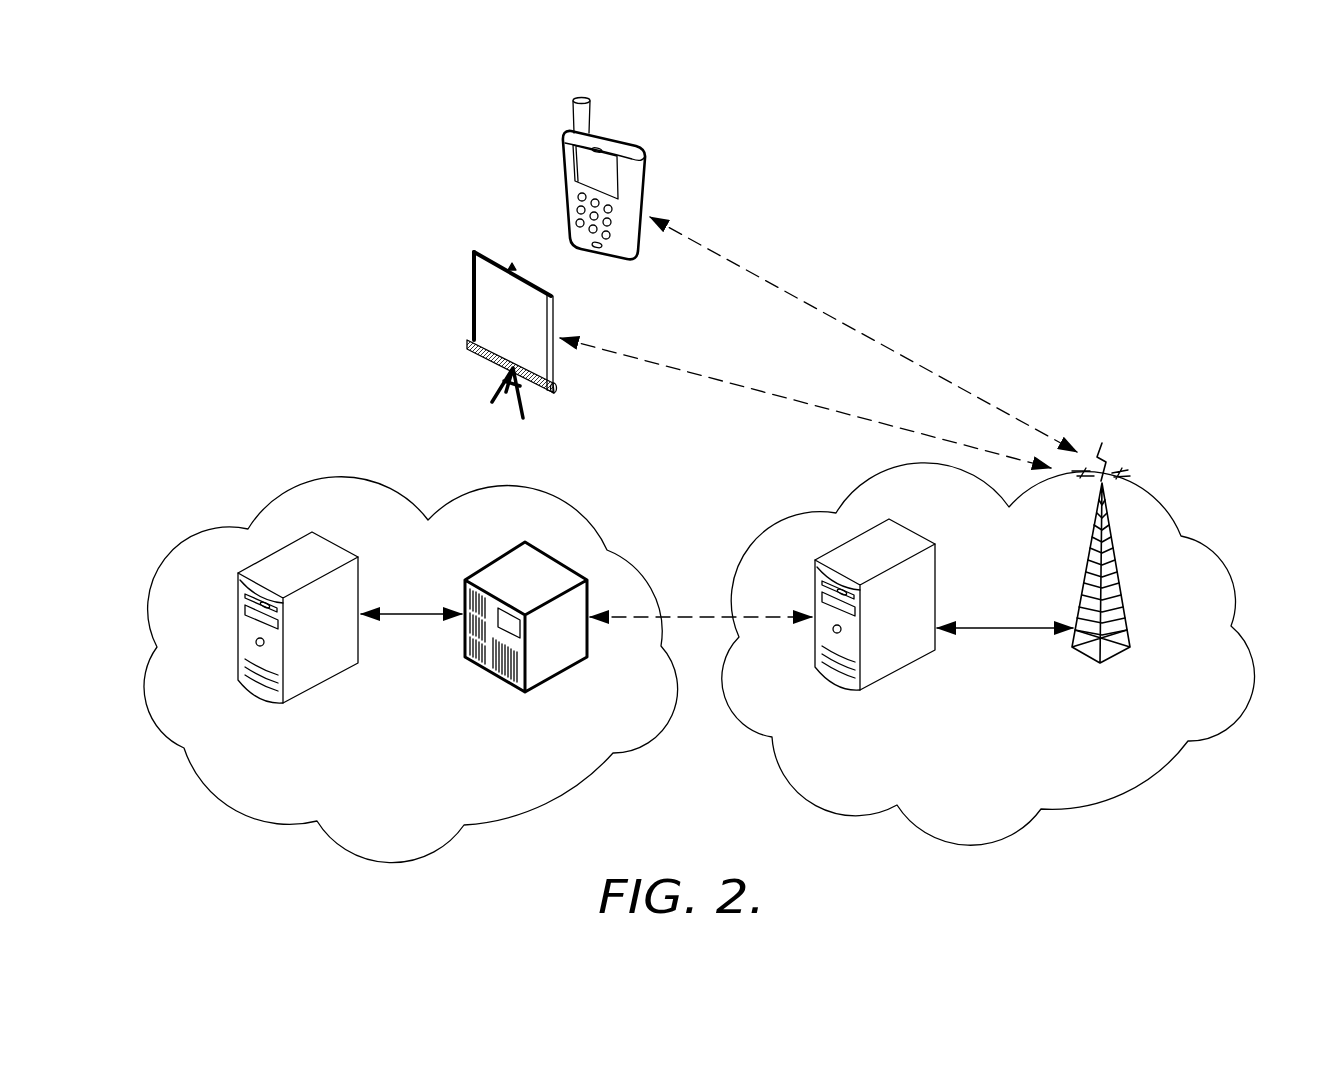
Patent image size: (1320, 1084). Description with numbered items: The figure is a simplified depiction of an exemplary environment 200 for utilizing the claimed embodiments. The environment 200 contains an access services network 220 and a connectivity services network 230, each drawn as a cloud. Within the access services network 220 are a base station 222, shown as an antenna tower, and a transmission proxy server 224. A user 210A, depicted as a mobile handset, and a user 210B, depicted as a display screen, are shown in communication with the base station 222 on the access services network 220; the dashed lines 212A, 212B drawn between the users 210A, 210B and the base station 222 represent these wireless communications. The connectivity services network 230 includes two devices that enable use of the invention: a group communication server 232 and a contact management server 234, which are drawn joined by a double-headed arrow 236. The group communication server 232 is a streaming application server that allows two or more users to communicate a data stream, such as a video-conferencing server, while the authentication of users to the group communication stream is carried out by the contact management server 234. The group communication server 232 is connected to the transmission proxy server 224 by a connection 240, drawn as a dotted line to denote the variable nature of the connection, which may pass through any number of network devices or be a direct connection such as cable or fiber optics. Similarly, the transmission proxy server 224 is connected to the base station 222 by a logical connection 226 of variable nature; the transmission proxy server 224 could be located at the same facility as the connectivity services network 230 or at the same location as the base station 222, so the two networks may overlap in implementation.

The exemplary environment 200 is at (232, 146).
The user 210A is at (563, 130).
The user 210B is at (476, 252).
The wireless link to terminal 210A 212A is at (863, 334).
The wireless link to terminal 210B 212B is at (805, 403).
The access services network 220 is at (1210, 546).
The base station 222 is at (1117, 559).
The transmission proxy server 224 is at (918, 535).
The connection 226 is at (971, 627).
The connectivity services network 230 is at (510, 484).
The group communication server 232 is at (505, 555).
The contact management server 234 is at (333, 542).
The link between server 234 and node 232 236 is at (392, 613).
The connection 240 is at (709, 603).